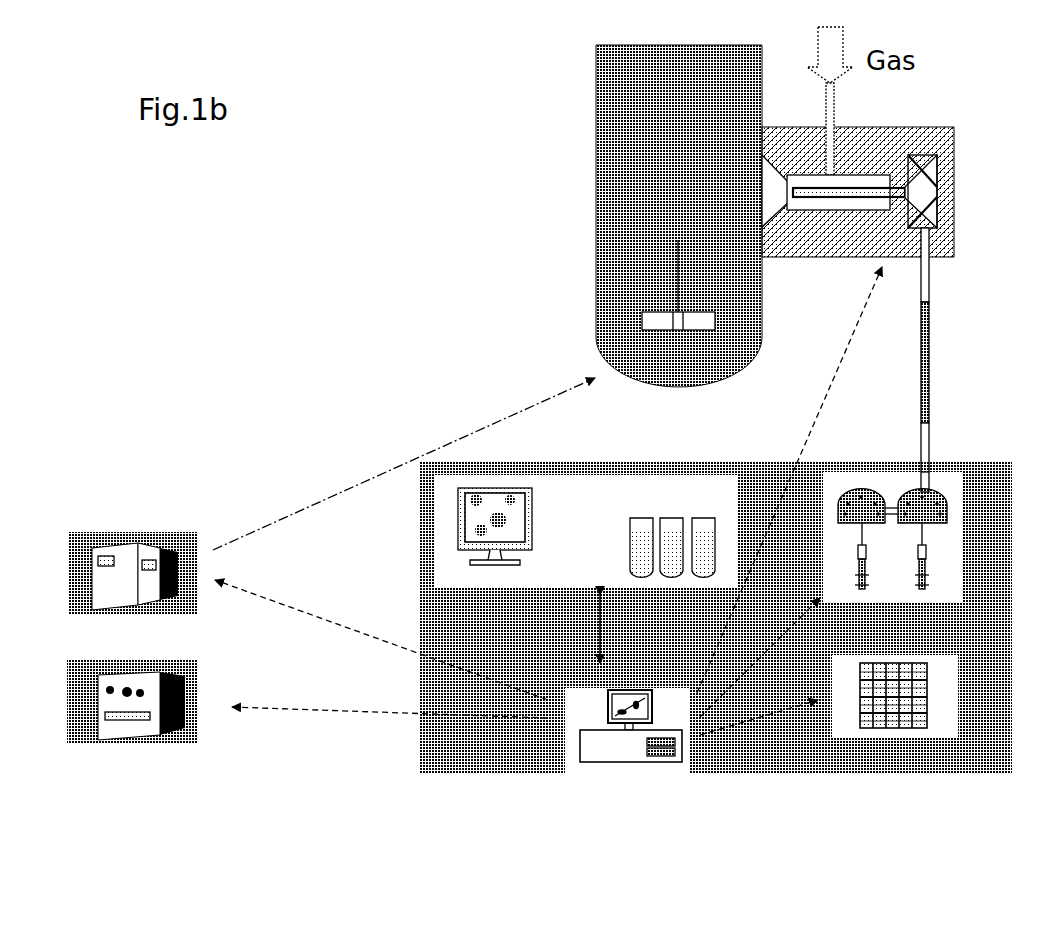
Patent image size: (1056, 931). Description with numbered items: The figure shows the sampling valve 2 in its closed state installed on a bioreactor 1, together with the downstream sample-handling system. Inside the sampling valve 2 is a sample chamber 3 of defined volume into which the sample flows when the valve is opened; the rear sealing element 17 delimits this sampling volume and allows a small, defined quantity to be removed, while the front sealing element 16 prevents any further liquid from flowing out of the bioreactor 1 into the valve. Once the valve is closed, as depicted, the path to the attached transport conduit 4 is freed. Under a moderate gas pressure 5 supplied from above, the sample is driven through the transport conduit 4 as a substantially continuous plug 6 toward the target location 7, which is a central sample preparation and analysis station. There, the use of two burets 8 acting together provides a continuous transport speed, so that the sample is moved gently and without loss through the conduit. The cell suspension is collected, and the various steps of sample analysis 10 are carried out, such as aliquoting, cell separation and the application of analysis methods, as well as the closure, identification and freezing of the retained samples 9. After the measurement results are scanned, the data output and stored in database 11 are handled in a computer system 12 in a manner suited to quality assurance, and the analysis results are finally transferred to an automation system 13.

The bioreactor 1 is at (597, 202).
The sampling valve 2 is at (930, 137).
The sample chamber 3 is at (810, 202).
The transport conduit 4 is at (923, 263).
The moderate gas pressure 5 is at (830, 110).
The continuous plug 6 is at (925, 380).
The target location 7 is at (710, 468).
The buret 8 is at (952, 533).
The retained samples 9 is at (960, 698).
The sample analysis 10 is at (553, 583).
The data output and stored in database 11 is at (563, 743).
The computer system 12 is at (195, 662).
The automation system 13 is at (180, 532).
The front sealing element 16 is at (772, 192).
The rear sealing element 17 is at (936, 190).